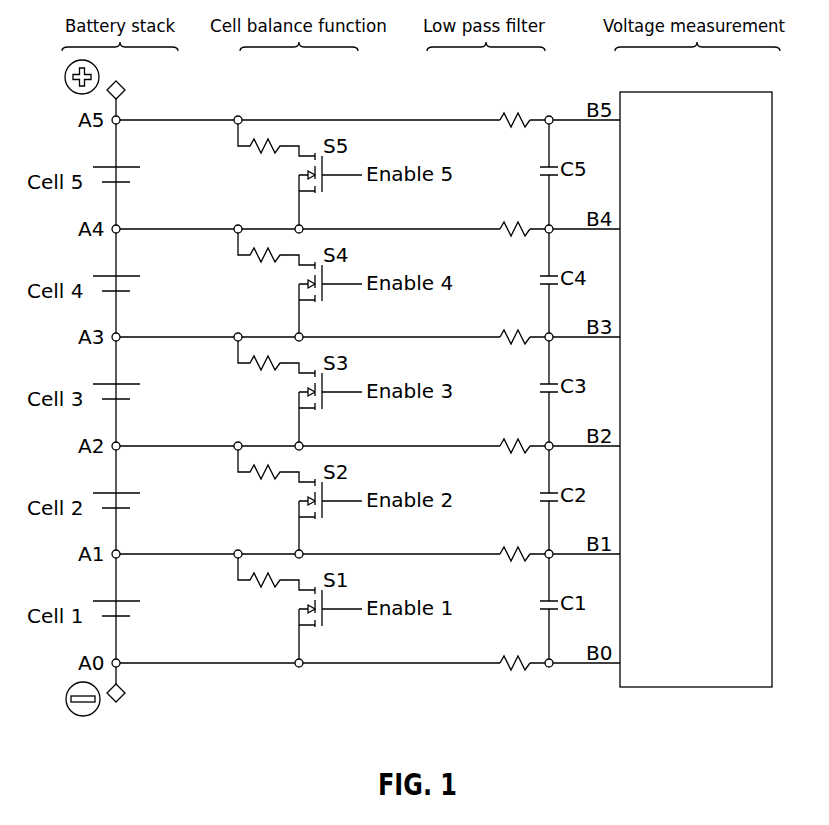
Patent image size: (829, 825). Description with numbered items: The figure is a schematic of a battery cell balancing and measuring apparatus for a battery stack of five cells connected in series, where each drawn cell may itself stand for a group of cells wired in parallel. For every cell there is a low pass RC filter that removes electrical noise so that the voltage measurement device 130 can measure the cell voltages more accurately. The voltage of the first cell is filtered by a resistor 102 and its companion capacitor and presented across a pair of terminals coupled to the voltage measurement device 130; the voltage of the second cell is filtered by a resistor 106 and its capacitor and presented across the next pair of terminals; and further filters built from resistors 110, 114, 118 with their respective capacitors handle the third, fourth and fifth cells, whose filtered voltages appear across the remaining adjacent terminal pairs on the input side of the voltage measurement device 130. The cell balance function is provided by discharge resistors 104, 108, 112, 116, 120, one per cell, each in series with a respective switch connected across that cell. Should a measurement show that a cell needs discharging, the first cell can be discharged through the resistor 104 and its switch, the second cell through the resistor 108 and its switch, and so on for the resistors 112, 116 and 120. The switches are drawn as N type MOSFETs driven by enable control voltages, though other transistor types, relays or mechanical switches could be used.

The resistor 102 is at (510, 561).
The discharge resistor 104 is at (262, 582).
The resistor 106 is at (510, 453).
The discharge resistor 108 is at (262, 474).
The resistor 110 is at (510, 344).
The discharge resistor 112 is at (262, 365).
The resistor 114 is at (510, 236).
The discharge resistor 116 is at (262, 257).
The resistor 118 is at (510, 127).
The discharge resistor 120 is at (262, 148).
The voltage measurement device 130 is at (695, 688).